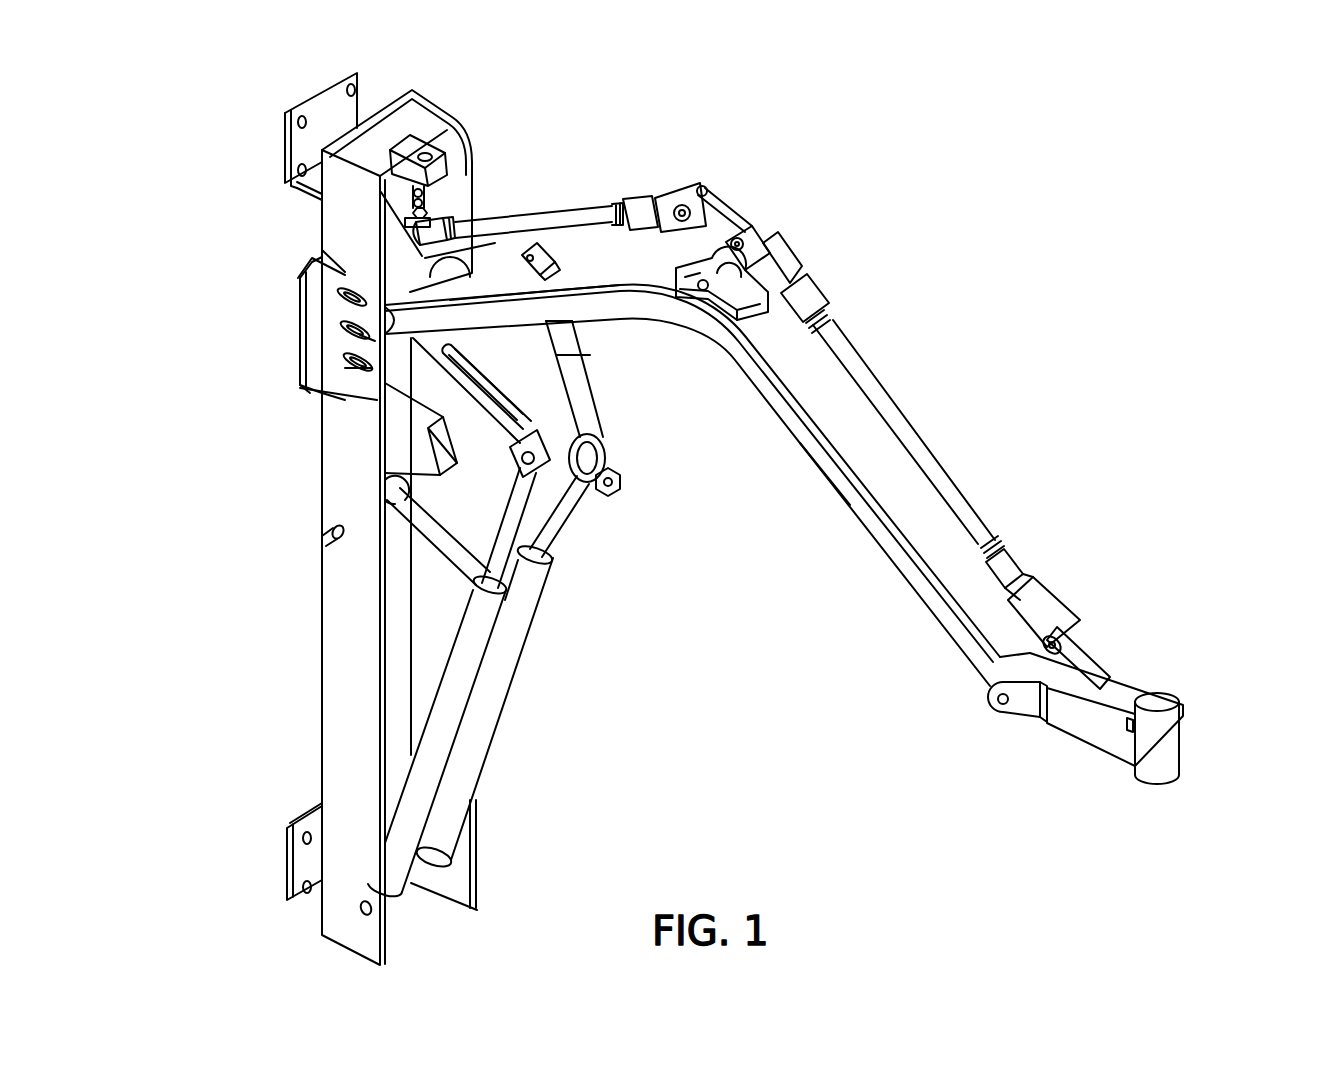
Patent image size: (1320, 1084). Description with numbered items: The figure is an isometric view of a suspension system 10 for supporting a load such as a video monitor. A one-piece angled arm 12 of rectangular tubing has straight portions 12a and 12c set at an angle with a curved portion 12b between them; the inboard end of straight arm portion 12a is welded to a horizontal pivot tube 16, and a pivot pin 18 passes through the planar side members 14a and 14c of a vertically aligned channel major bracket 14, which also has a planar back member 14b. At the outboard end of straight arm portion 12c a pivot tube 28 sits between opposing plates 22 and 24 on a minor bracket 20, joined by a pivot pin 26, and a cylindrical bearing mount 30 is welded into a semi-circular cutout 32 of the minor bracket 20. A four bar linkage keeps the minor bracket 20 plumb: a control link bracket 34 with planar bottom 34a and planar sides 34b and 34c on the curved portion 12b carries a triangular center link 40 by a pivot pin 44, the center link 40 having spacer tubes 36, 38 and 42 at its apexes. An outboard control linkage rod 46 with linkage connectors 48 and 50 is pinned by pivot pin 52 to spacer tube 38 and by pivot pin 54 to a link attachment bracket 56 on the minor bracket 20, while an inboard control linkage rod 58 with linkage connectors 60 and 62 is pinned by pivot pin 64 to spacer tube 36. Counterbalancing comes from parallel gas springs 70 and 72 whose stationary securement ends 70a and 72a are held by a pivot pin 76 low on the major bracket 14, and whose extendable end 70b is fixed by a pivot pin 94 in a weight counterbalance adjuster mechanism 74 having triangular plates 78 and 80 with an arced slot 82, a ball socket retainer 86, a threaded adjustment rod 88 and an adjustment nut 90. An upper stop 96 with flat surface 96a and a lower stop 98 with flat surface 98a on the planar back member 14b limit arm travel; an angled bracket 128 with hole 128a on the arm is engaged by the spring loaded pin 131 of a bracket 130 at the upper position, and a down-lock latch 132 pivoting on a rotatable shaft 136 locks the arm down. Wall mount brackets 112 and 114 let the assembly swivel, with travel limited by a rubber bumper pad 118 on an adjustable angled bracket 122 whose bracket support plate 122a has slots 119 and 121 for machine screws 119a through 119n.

The suspension system 10 is at (952, 294).
The angled arm 12 is at (780, 453).
The straight arm portion 12a is at (497, 290).
The curved portion 12b is at (660, 319).
The straight arm portion 12c is at (850, 403).
The major bracket 14 is at (317, 488).
The planar side member 14a is at (393, 442).
The planar back member 14b is at (397, 130).
The planar side member 14c is at (457, 158).
The pivot tube 16 is at (390, 330).
The pivot pin 18 is at (368, 338).
The minor bracket 20 is at (1200, 660).
The plate 22 is at (1027, 720).
The plate 24 is at (1107, 643).
The pivot pin 26 is at (1000, 702).
The pivot tube 28 is at (1020, 660).
The cylindrical bearing mount 30 is at (1167, 762).
The semi-circular cutout 32 is at (1130, 730).
The control link bracket 34 is at (735, 318).
The planar bottom 34a is at (752, 308).
The planar side 34b is at (687, 270).
The planar side 34c is at (795, 266).
The spacer tube 36 is at (706, 189).
The spacer tube 38 is at (765, 240).
The center link 40 is at (720, 213).
The spacer tube 42 is at (716, 262).
The pivot pin 44 is at (705, 290).
The outboard control linkage rod 46 is at (900, 427).
The linkage connector 48 is at (812, 300).
The linkage connector 50 is at (1018, 565).
The pivot pin 52 is at (742, 240).
The pivot pin 54 is at (1058, 632).
The link attachment bracket 56 is at (1080, 643).
The inboard control linkage rod 58 is at (557, 218).
The linkage connector 60 is at (647, 200).
The linkage connector 62 is at (446, 230).
The pivot pin 64 is at (693, 202).
The gas spring 70 is at (445, 750).
The stationary securement end 70a is at (398, 897).
The non-stationary securement end 70b is at (535, 472).
The gas spring 72 is at (488, 720).
The stationary securement end 72a is at (447, 872).
The weight counterbalance adjuster mechanism 74 is at (607, 415).
The pivot pin 76 is at (362, 912).
The plate 78 is at (547, 420).
The plate 80 is at (573, 390).
The arced slot 82 is at (470, 360).
The ball socket retainer 86 is at (592, 445).
The threaded adjustment rod 88 is at (590, 477).
The adjustment nut 90 is at (613, 483).
The pivot pin 94 is at (520, 447).
The upper stop 96 is at (383, 157).
The flat surface 96a is at (427, 211).
The lower stop 98 is at (338, 463).
The flat surface 98a is at (437, 442).
The wall mount bracket 112 is at (283, 130).
The wall mount bracket 114 is at (297, 872).
The rubber bumper pad 118 is at (308, 257).
The slot 119 is at (343, 300).
The machine screw 119a is at (323, 248).
The machine screw 119n is at (357, 370).
The slot 121 is at (303, 390).
The adjustable angled bracket 122 is at (320, 335).
The bracket support plate 122a is at (337, 400).
The angled bracket 128 is at (528, 253).
The hole 128a is at (537, 262).
The bracket 130 is at (472, 130).
The spring loaded pin 131 is at (428, 152).
The down-lock latch 132 is at (450, 558).
The rotatable shaft 136 is at (325, 543).